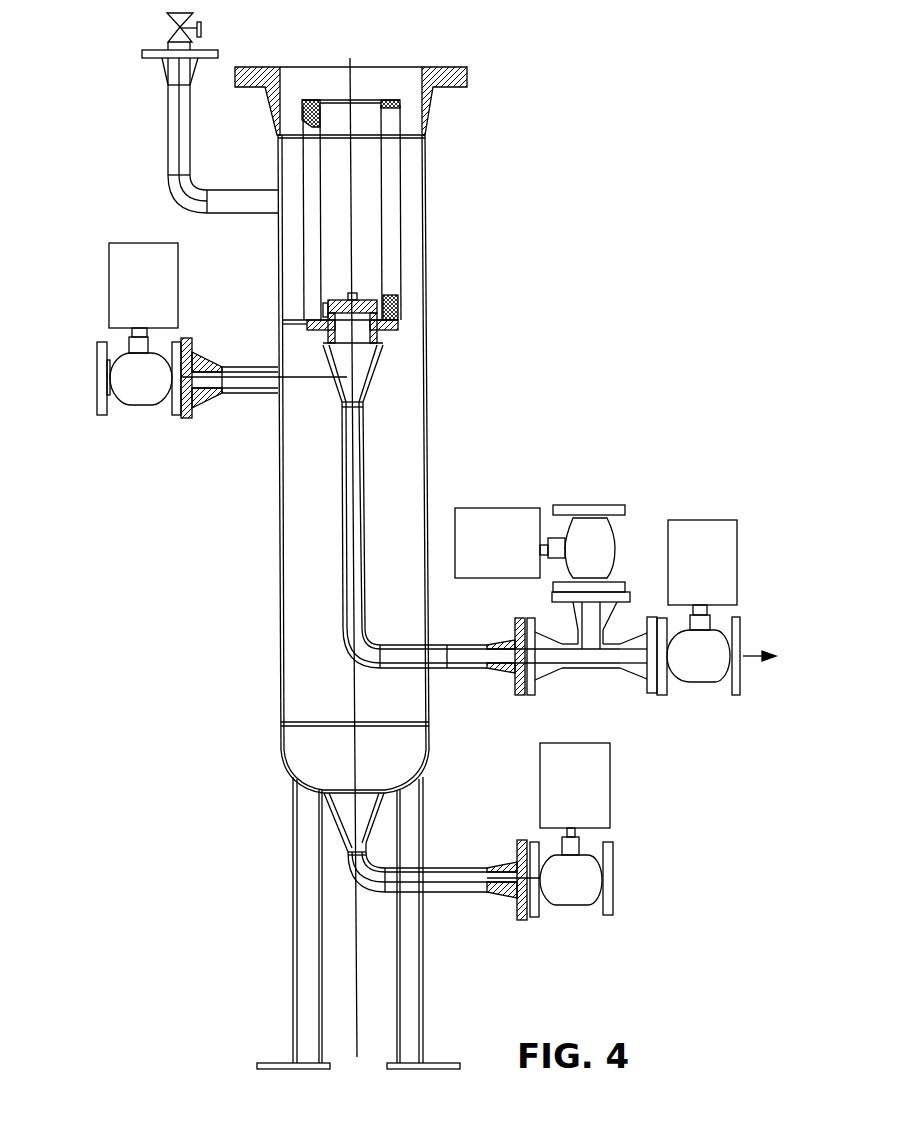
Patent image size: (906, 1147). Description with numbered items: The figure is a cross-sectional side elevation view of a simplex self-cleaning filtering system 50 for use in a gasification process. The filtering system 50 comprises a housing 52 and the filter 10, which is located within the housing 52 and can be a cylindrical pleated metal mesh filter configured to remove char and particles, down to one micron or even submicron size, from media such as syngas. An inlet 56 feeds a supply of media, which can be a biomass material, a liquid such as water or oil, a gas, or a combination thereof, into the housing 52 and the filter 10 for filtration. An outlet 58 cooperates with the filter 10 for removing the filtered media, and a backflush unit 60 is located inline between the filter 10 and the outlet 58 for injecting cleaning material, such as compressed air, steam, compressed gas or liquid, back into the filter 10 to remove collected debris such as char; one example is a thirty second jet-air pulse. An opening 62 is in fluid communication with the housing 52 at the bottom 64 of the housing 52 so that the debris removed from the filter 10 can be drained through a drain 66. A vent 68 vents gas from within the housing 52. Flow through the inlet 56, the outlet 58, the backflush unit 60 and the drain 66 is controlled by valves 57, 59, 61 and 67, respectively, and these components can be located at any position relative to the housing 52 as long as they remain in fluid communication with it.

The self-cleaning simplex filtering system 50 is at (104, 189).
The filter 10 is at (312, 233).
The housing 52 is at (280, 468).
The inlet 56 is at (147, 388).
The valve 57 is at (128, 277).
The outlet 58 is at (705, 664).
The valve 59 is at (718, 588).
The backflush unit 60 is at (580, 542).
The valve 61 is at (502, 518).
The opening 62 is at (348, 817).
The bottom of the housing 64 is at (280, 682).
The drain 66 is at (575, 893).
The valve 67 is at (592, 780).
The vent 68 is at (168, 22).